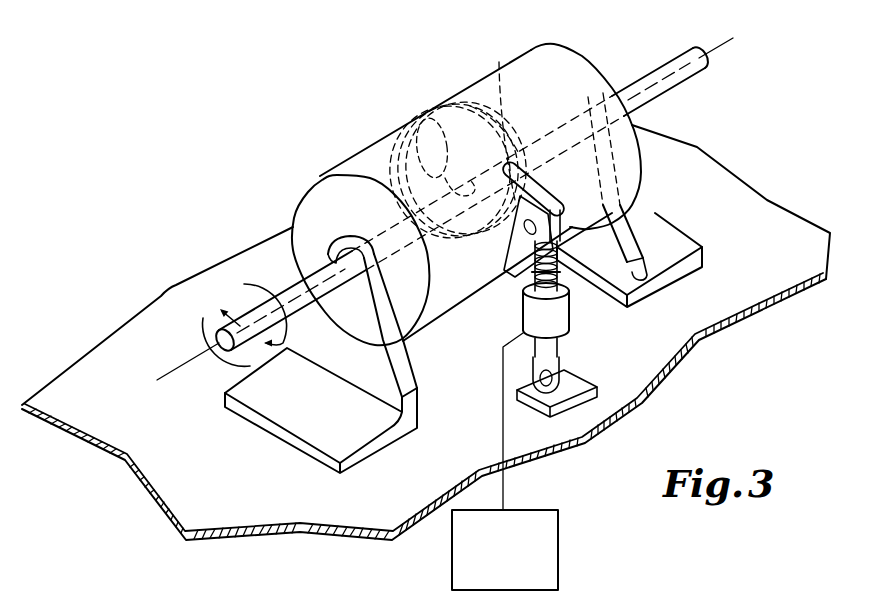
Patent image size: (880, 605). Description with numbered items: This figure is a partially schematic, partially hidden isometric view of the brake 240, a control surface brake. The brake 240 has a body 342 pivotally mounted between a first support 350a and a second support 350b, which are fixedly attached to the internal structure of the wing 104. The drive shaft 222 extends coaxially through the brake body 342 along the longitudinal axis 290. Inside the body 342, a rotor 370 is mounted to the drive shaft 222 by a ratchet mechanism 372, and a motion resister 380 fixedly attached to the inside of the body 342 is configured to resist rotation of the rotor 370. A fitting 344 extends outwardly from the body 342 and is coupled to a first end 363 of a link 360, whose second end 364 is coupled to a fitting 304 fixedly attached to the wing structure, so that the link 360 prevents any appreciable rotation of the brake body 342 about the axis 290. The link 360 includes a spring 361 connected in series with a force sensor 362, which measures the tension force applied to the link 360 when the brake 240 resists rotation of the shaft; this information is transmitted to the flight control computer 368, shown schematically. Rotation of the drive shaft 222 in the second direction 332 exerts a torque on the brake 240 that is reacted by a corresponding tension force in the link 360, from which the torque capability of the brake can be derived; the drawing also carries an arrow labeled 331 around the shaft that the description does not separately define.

The wing 104 is at (155, 498).
The drive shaft 222 is at (657, 70).
The brake 240 is at (333, 157).
The longitudinal axis 290 is at (187, 362).
The fitting 304 is at (638, 399).
The rotation direction arrow 331 is at (250, 284).
The second direction 332 is at (203, 328).
The brake body 342 is at (499, 62).
The fitting 344 is at (470, 296).
The first support 350a is at (293, 417).
The second support 350b is at (672, 246).
The link 360 is at (521, 280).
The spring 361 is at (570, 266).
The force sensor 362 is at (573, 312).
The first end 363 is at (632, 208).
The second end 364 is at (565, 385).
The flight control computer 368 is at (558, 543).
The rotor 370 is at (436, 118).
The ratchet mechanism 372 is at (392, 124).
The motion resister 380 is at (478, 100).